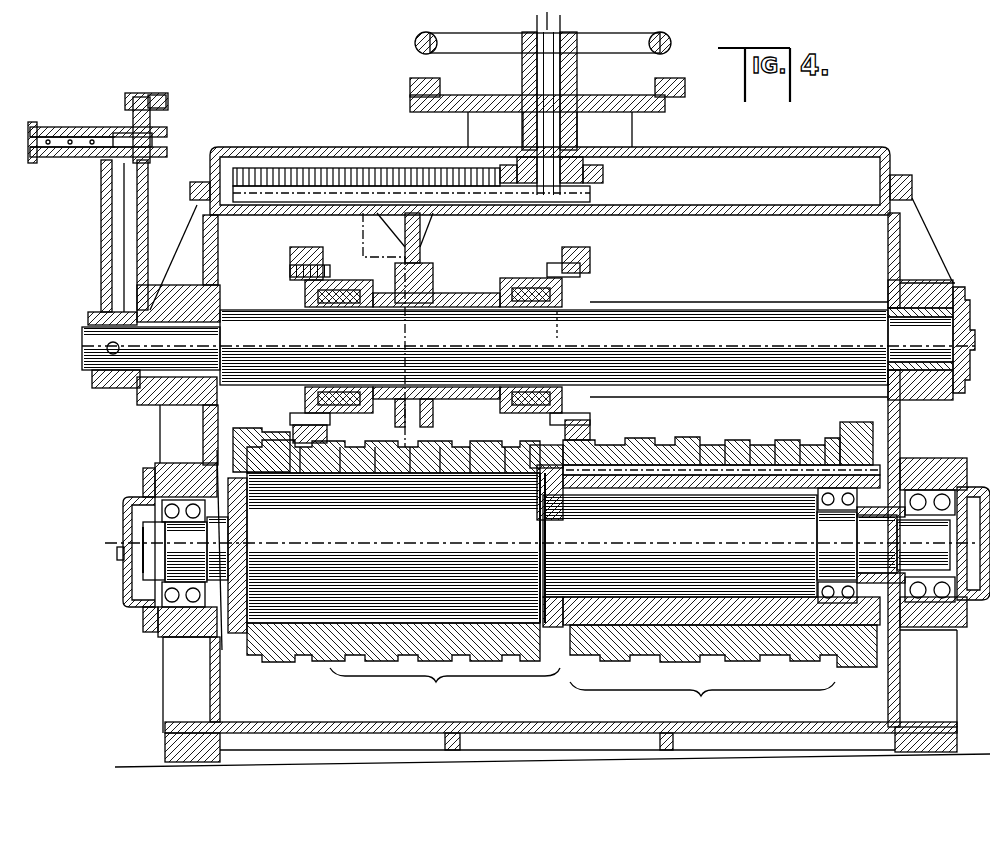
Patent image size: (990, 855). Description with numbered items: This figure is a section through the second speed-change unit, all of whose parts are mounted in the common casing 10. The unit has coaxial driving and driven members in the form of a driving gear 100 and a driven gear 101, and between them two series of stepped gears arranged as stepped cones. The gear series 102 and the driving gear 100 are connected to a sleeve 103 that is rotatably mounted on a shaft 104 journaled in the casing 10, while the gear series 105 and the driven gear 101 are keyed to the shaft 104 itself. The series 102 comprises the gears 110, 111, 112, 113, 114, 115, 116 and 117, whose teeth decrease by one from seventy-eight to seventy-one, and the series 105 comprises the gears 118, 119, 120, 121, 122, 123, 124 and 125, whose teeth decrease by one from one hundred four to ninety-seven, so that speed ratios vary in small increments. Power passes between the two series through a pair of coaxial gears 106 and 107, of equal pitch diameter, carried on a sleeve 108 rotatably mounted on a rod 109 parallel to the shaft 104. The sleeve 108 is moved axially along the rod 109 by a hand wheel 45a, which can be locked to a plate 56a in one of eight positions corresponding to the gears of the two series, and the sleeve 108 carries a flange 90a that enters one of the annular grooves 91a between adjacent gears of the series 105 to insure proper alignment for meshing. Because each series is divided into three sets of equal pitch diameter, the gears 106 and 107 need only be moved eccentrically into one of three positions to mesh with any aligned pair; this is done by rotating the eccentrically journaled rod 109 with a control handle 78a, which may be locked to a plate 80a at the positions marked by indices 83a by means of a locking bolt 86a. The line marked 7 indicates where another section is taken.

The casing 10 is at (898, 432).
The control handle 78a is at (101, 258).
The plate 80a is at (150, 238).
The indices 83a is at (128, 100).
The locking bolt 86a is at (78, 135).
The hand wheel 45a is at (416, 43).
The plate 56a is at (428, 112).
The section line 7 is at (567, 22).
The rod 109 is at (706, 310).
The gear 106 is at (290, 250).
The gear 107 is at (562, 250).
The flange 90a is at (332, 270).
The annular grooves 91a is at (348, 440).
The sleeve 108 is at (458, 296).
The driven gear 101 is at (246, 428).
The gear 118 is at (304, 472).
The gear 119 is at (347, 472).
The gear 120 is at (378, 472).
The gear 121 is at (410, 472).
The gear 122 is at (438, 472).
The gear 123 is at (472, 472).
The gear 124 is at (508, 472).
The gear 125 is at (542, 445).
The sleeve 103 is at (575, 488).
The gear 110 is at (590, 490).
The gear 111 is at (617, 488).
The gear 112 is at (665, 440).
The gear 113 is at (690, 440).
The gear 114 is at (720, 440).
The gear 115 is at (748, 440).
The gear 116 is at (780, 440).
The gear 117 is at (828, 434).
The driving gear 100 is at (848, 422).
The shaft 104 is at (748, 598).
The gear series 105 is at (445, 687).
The gear series 102 is at (702, 701).